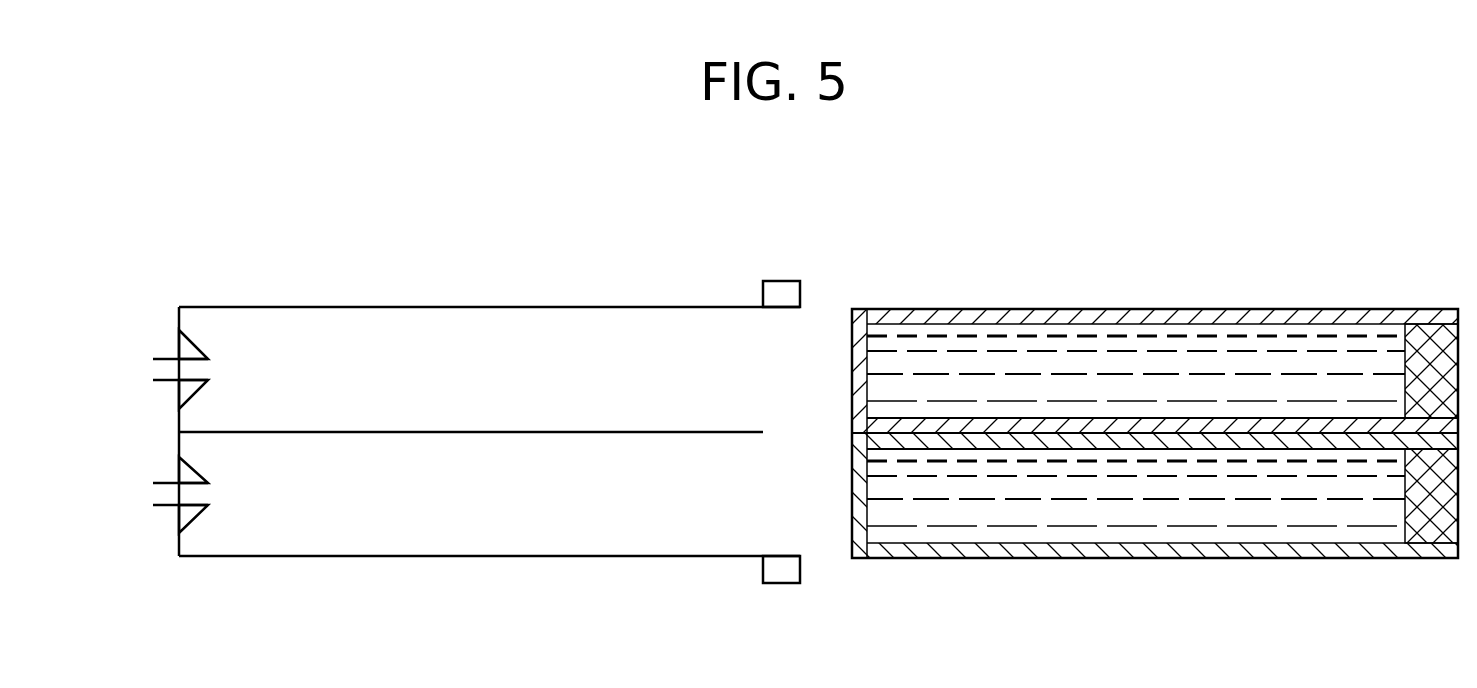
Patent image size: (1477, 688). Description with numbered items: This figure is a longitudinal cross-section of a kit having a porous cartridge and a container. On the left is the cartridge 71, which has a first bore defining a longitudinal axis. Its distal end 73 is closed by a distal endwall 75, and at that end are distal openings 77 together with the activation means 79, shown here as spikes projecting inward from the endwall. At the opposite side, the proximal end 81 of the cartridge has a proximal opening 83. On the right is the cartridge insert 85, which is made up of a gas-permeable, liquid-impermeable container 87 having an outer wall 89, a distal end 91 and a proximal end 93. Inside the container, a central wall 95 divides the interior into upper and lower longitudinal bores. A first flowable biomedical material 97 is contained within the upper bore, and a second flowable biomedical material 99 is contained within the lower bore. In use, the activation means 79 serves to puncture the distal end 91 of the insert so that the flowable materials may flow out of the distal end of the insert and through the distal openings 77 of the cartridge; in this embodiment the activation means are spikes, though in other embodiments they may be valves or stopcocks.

The cartridge 71 is at (474, 242).
The distal end 73 is at (197, 307).
The distal endwall 75 is at (177, 322).
The distal openings 77 is at (163, 368).
The activation means 79 is at (202, 351).
The proximal end 81 is at (778, 281).
The proximal opening 83 is at (800, 498).
The cartridge insert 85 is at (1222, 225).
The container 87 is at (1077, 558).
The outer wall 89 is at (960, 308).
The distal end 91 is at (884, 300).
The proximal end 93 is at (1413, 309).
The central wall 95 is at (1275, 427).
The first flowable biomedical material 97 is at (1128, 355).
The second flowable biomedical material 99 is at (1195, 508).